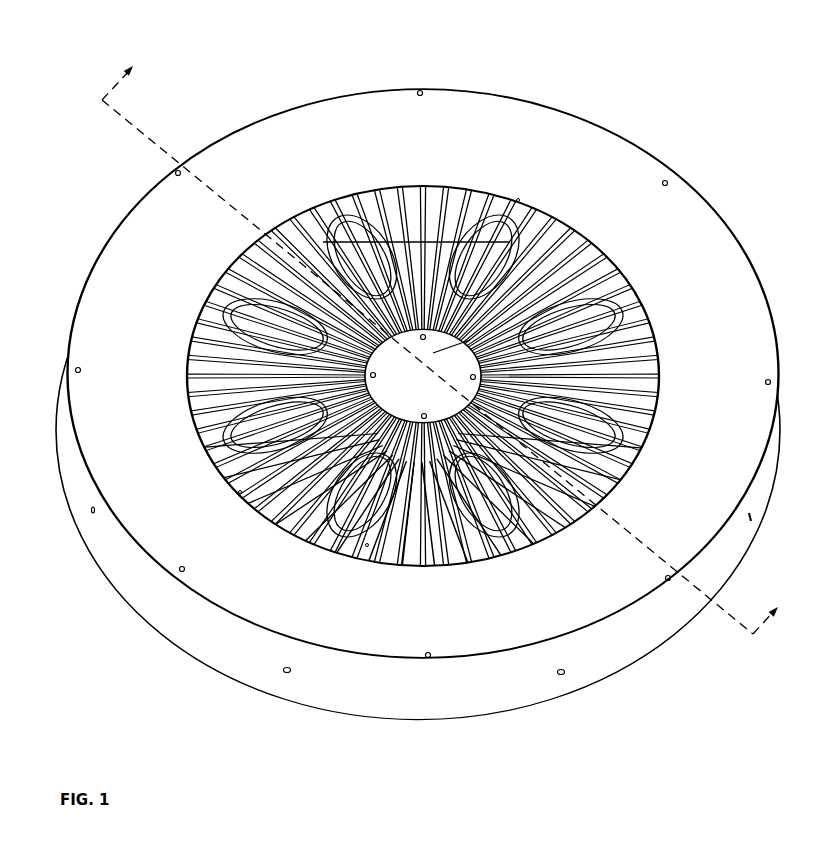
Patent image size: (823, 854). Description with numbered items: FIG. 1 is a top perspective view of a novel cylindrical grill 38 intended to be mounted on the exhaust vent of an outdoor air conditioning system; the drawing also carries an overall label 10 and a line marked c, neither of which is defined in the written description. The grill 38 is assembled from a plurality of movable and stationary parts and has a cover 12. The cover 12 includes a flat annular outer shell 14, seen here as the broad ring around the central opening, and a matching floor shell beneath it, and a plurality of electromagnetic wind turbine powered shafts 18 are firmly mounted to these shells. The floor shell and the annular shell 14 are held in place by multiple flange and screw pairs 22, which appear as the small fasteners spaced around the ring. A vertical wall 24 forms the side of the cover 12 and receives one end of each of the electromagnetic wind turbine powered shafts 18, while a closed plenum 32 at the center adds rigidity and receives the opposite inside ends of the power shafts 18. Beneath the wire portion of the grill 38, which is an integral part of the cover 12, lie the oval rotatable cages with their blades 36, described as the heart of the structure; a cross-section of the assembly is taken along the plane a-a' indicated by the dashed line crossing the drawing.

The light fixture assembly 10 is at (247, 100).
The cover 12 is at (90, 437).
The flat annular outer shell 14 is at (127, 245).
The electromagnetic wind turbine powered shafts 18 is at (518, 200).
The flange and screw pairs 22 is at (177, 173).
The vertical wall 24 is at (663, 610).
The closed plenum 32 is at (584, 237).
The blades 36 is at (607, 430).
The grill 38 is at (333, 200).
The center line c is at (240, 300).